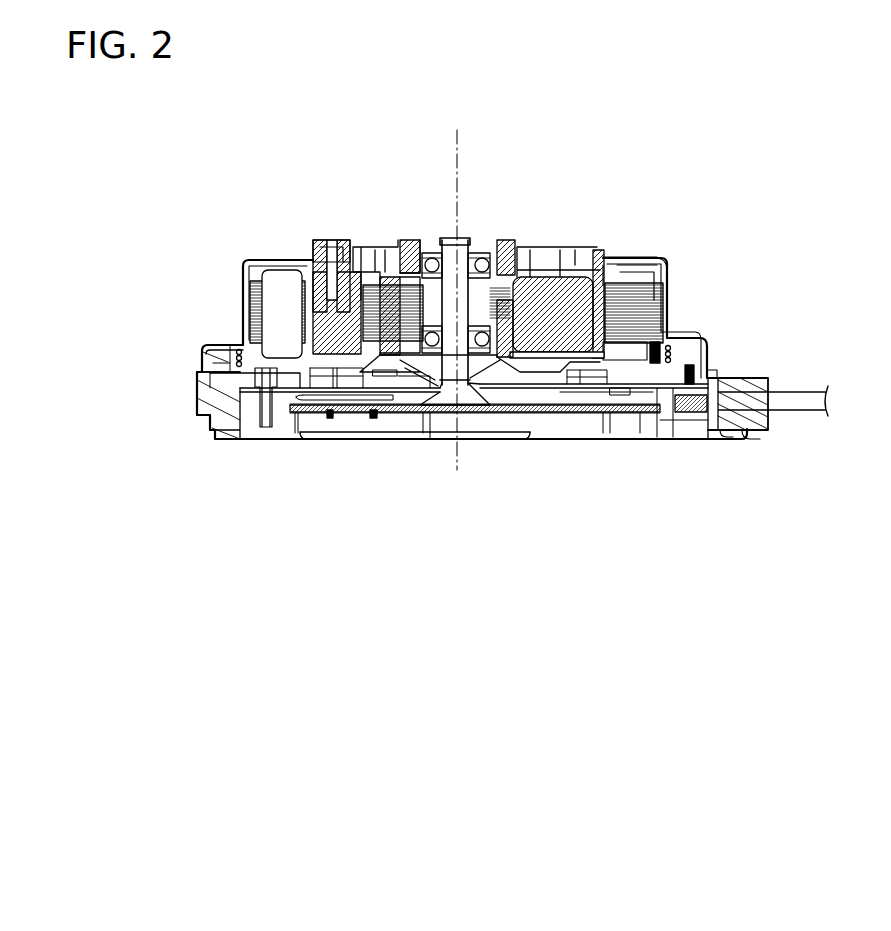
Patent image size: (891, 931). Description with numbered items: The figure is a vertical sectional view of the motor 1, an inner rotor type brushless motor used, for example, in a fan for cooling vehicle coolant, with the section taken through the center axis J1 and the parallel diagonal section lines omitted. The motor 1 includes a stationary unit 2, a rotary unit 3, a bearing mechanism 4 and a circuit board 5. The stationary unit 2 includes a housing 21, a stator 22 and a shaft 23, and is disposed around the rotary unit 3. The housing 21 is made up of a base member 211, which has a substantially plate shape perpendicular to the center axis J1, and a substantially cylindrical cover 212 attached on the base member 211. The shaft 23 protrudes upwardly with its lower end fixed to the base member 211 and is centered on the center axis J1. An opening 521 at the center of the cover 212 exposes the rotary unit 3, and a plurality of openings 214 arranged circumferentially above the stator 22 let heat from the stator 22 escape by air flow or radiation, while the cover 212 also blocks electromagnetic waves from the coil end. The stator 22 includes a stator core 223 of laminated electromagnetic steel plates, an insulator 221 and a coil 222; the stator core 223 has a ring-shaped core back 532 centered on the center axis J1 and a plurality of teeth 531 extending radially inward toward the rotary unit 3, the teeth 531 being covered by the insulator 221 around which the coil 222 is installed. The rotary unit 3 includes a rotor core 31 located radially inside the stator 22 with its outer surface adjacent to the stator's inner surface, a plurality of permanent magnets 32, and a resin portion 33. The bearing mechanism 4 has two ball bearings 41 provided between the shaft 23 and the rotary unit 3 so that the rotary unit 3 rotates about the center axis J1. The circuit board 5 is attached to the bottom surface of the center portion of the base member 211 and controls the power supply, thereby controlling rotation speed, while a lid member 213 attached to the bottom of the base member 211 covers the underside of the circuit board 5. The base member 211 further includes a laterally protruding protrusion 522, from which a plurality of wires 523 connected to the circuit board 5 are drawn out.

The motor 1 is at (202, 210).
The stationary unit 2 is at (152, 311).
The housing 21 is at (391, 354).
The base member 211 is at (205, 392).
The cover 212 is at (205, 352).
The lid member 213 is at (545, 448).
The openings 214 is at (282, 258).
The stator 22 is at (502, 263).
The insulator 221 is at (667, 262).
The coil 222 is at (628, 277).
The stator core 223 is at (672, 312).
The shaft 23 is at (447, 237).
The rotary unit 3 is at (375, 172).
The rotor core 31 is at (366, 243).
The magnets 32 is at (572, 287).
The resin portion 33 is at (344, 240).
The bearing mechanism 4 is at (519, 188).
The bearings 41 is at (488, 250).
The circuit board 5 is at (554, 334).
The opening 521 is at (320, 232).
The protrusion 522 is at (751, 425).
The wires 523 is at (793, 405).
The teeth 531 is at (617, 298).
The core back 532 is at (668, 302).
The center axis J1 is at (452, 158).